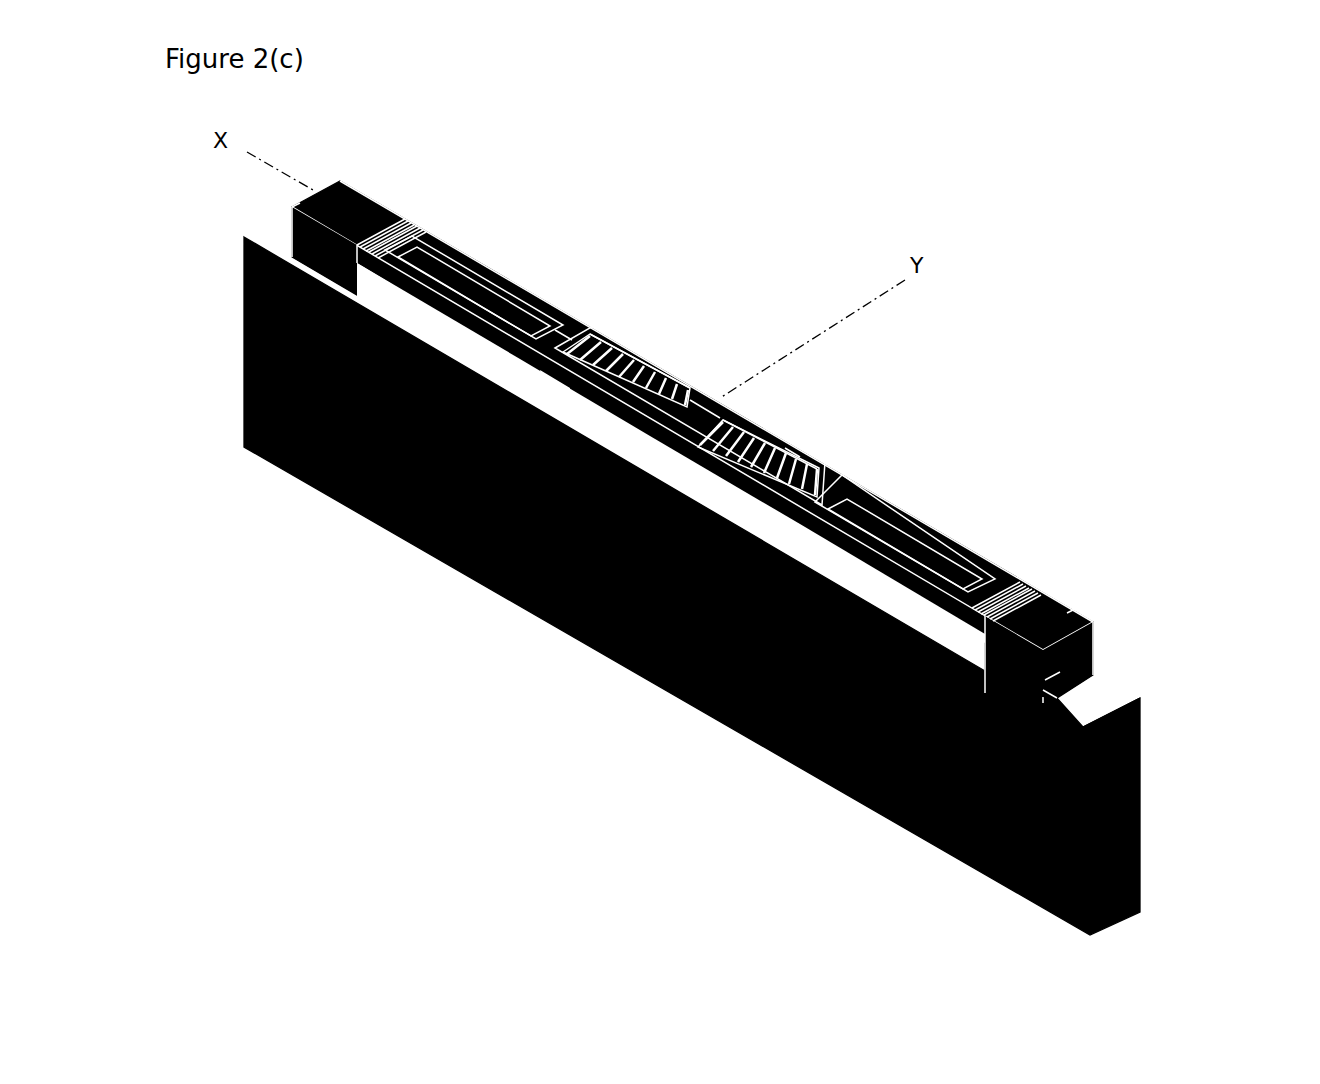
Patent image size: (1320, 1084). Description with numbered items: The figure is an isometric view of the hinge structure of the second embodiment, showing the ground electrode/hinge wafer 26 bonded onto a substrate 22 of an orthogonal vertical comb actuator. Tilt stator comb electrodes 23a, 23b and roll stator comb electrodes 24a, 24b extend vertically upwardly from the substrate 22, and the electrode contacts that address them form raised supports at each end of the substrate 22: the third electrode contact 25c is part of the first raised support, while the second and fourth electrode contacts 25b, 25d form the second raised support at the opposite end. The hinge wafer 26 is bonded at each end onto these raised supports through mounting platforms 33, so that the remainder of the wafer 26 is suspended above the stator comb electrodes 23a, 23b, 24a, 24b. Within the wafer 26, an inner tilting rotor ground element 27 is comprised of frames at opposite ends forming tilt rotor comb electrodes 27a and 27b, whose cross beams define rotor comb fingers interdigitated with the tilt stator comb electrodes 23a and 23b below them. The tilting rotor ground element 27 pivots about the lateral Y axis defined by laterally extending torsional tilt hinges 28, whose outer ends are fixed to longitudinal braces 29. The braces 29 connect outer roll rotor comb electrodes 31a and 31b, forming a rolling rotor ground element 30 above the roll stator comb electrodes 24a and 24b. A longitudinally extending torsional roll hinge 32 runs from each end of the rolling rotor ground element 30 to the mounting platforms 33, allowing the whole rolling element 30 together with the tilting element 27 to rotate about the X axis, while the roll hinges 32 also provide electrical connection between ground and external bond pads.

The substrate 22 is at (1100, 748).
The tilt stator comb electrode 23a is at (598, 432).
The tilt stator comb electrode 23b is at (695, 462).
The roll stator comb electrode 24a is at (455, 338).
The roll stator comb electrode 24b is at (897, 582).
The second electrode contact 25b is at (1093, 650).
The third electrode contact 25c is at (292, 227).
The fourth electrode contact 25d is at (1060, 700).
The ground electrode/hinge wafer 26 is at (349, 168).
The tilting rotor ground element 27 is at (662, 358).
The tilt rotor comb electrode 27a is at (621, 353).
The tilt rotor comb electrode 27b is at (800, 447).
The torsional tilt hinge 28 is at (703, 397).
The longitudinal brace 29 is at (563, 332).
The rolling rotor ground element 30 is at (513, 265).
The roll rotor comb electrode 31a is at (462, 252).
The roll rotor comb electrode 31b is at (957, 537).
The torsional roll hinge 32 is at (403, 218).
The mounting platform 33 is at (308, 206).